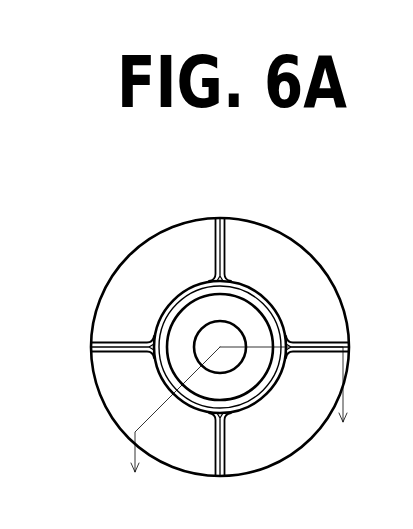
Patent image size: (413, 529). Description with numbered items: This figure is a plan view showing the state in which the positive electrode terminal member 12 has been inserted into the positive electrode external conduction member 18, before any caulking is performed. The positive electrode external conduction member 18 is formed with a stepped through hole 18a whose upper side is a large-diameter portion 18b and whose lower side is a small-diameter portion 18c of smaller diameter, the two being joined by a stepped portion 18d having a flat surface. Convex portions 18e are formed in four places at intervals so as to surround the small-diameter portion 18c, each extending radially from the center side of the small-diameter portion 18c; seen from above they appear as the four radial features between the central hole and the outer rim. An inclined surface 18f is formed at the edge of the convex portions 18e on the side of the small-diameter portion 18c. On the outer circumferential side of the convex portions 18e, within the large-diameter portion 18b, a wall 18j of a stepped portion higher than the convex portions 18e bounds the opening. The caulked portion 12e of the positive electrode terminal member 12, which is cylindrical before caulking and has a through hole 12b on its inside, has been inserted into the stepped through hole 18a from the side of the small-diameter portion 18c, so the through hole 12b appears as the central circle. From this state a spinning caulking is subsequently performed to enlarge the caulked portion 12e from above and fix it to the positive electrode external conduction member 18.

The positive electrode external conduction member 18 is at (188, 193).
The stepped through hole 18a is at (276, 224).
The large-diameter portion 18b is at (268, 249).
The small-diameter portion 18c is at (276, 310).
The stepped portion 18d is at (119, 378).
The convex portions 18e is at (113, 344).
The inclined surface 18f is at (292, 343).
The wall 18j is at (355, 316).
The positive electrode terminal member 12 is at (144, 307).
The caulked portion 12e is at (198, 320).
The through hole 12b is at (211, 327).